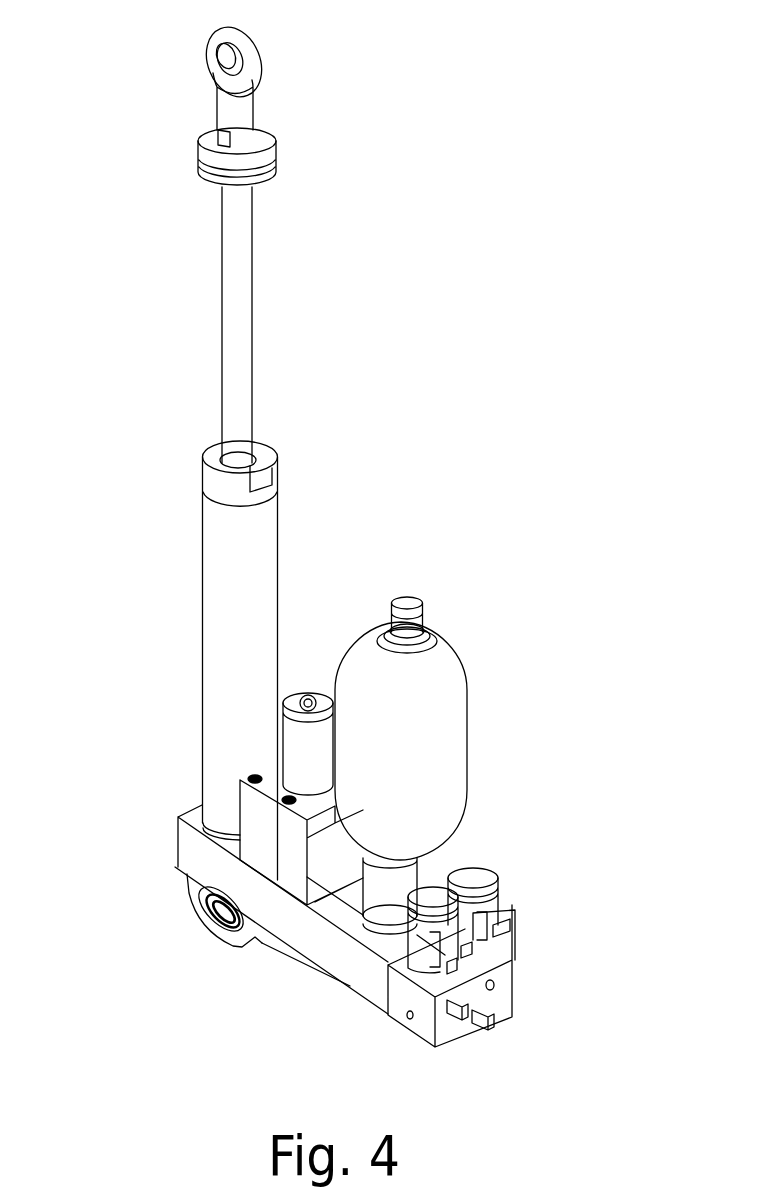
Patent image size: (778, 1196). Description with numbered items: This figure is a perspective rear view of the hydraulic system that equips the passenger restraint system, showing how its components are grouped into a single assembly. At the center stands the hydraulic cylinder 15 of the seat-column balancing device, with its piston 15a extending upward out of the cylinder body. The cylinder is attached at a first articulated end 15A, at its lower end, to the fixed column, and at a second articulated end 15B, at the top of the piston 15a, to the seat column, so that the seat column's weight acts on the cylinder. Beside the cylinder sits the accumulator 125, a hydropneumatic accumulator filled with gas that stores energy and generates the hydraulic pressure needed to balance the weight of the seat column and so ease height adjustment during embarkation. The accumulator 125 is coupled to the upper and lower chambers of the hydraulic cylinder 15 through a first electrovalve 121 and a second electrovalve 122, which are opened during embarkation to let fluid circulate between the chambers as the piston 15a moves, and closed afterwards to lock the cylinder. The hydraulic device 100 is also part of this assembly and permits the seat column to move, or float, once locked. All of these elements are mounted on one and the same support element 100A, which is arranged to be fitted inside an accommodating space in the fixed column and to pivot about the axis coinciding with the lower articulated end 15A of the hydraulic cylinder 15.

The hydraulic cylinder 15 is at (207, 598).
The piston 15a is at (230, 309).
The first articulated end 15A is at (200, 910).
The second articulated end 15B is at (248, 58).
The hydraulic device 100 is at (308, 678).
The support element 100A is at (279, 936).
The first electrovalve 121 is at (413, 938).
The second electrovalve 122 is at (493, 883).
The accumulator 125 is at (450, 742).